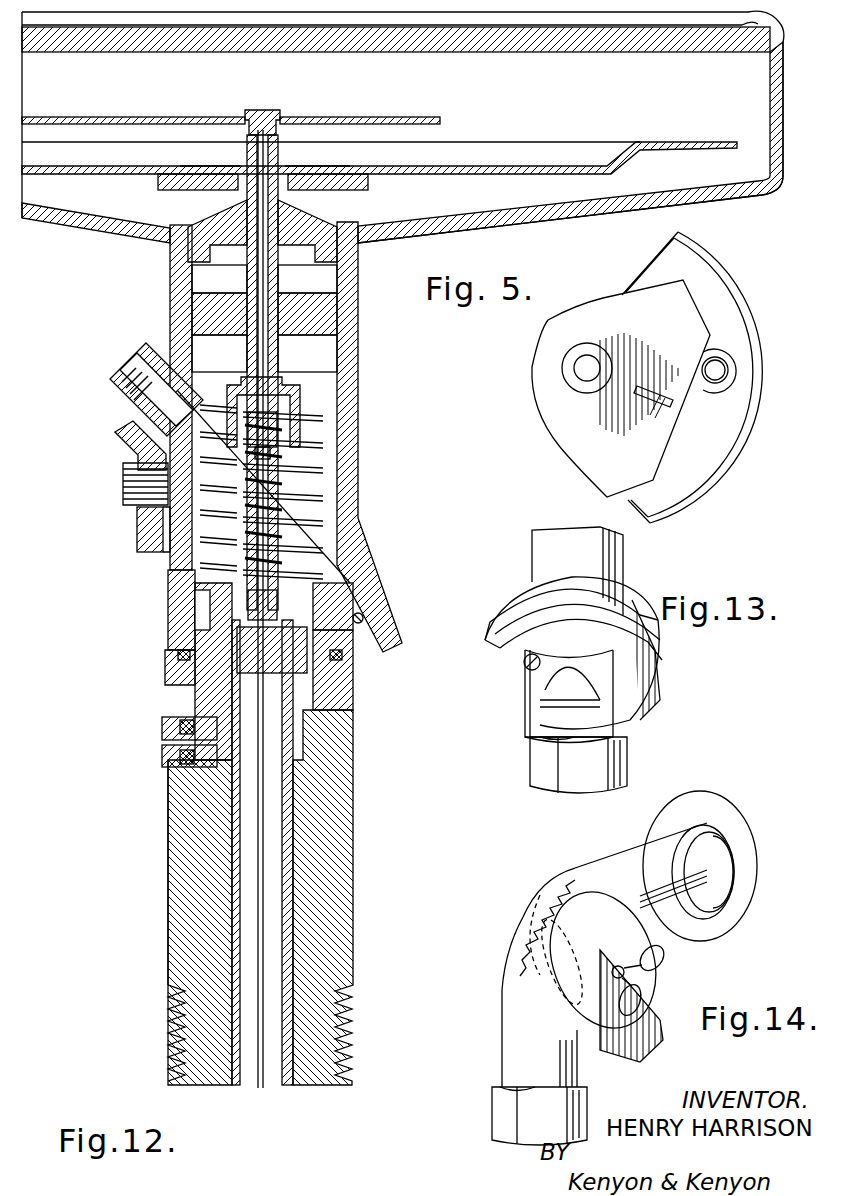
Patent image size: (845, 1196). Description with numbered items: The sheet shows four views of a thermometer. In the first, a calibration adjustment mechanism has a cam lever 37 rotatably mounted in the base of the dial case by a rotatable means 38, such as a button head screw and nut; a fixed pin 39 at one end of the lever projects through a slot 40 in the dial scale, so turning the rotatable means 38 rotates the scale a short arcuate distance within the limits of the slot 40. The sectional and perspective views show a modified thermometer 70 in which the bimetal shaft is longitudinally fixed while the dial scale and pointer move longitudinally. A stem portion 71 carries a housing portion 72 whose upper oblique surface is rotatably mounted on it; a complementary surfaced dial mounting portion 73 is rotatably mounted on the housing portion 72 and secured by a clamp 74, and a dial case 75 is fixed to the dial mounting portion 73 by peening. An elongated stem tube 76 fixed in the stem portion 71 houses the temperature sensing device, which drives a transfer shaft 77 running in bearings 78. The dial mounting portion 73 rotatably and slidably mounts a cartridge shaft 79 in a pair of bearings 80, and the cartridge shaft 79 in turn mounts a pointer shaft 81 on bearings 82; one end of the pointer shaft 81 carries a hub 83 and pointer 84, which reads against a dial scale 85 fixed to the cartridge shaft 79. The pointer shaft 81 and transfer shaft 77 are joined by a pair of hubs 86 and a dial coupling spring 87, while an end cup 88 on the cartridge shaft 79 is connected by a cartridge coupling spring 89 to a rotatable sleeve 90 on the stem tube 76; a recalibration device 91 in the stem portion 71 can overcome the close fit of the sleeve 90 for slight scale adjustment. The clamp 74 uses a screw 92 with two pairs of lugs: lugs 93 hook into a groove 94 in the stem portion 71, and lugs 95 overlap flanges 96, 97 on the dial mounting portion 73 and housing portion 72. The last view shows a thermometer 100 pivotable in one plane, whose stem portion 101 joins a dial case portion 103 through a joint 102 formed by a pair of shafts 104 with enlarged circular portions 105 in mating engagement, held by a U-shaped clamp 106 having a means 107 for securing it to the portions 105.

In FIG. 5, the cam lever 37 is at (690, 398).
In FIG. 5, the rotatable means 38 is at (728, 370).
In FIG. 5, the fixed pin 39 is at (655, 410).
In FIG. 5, the slot 40 is at (633, 405).
In FIG. 12, the thermometer 70 is at (120, 682).
In FIG. 12, the stem portion 71 is at (170, 835).
In FIG. 13, the stem portion 71 is at (622, 763).
In FIG. 12, the housing portion 72 is at (170, 598).
In FIG. 13, the housing portion 72 is at (545, 705).
In FIG. 12, the dial mounting portion 73 is at (172, 287).
In FIG. 13, the dial mounting portion 73 is at (612, 555).
In FIG. 12, the clamp 74 is at (118, 436).
In FIG. 13, the clamp 74 is at (570, 672).
In FIG. 12, the dial case 75 is at (90, 230).
In FIG. 12, the stem tube 76 is at (235, 878).
In FIG. 12, the transfer shaft 77 is at (258, 846).
In FIG. 12, the bearings 78 is at (290, 640).
In FIG. 12, the cartridge shaft 79 is at (247, 354).
In FIG. 12, the bearings 80 is at (220, 215).
In FIG. 12, the pointer shaft 81 is at (280, 160).
In FIG. 12, the bearings 82 is at (250, 158).
In FIG. 12, the hub 83 is at (280, 112).
In FIG. 12, the pointer 84 is at (153, 117).
In FIG. 12, the dial scale 85 is at (124, 172).
In FIG. 12, the hubs 86 is at (278, 428).
In FIG. 12, the dial coupling spring 87 is at (335, 495).
In FIG. 12, the end cup 88 is at (300, 390).
In FIG. 12, the cartridge coupling spring 89 is at (300, 468).
In FIG. 12, the rotatable sleeve 90 is at (292, 640).
In FIG. 12, the recalibration device 91 is at (146, 756).
In FIG. 12, the screw 92 is at (122, 484).
In FIG. 13, the screw 92 is at (524, 670).
In FIG. 13, the lugs 93 is at (612, 728).
In FIG. 12, the groove 94 is at (172, 702).
In FIG. 13, the lugs 95 is at (638, 636).
In FIG. 12, the flange 96 is at (140, 360).
In FIG. 12, the flange 97 is at (118, 392).
In FIG. 14, the thermometer 100 is at (500, 948).
In FIG. 14, the stem portion 101 is at (497, 1110).
In FIG. 14, the joint 102 is at (532, 886).
In FIG. 14, the dial case portion 103 is at (660, 805).
In FIG. 14, the shafts 104 is at (618, 852).
In FIG. 14, the enlarged circular portions 105 is at (635, 936).
In FIG. 14, the U-shaped clamp 106 is at (652, 1040).
In FIG. 14, the means 107 is at (650, 970).